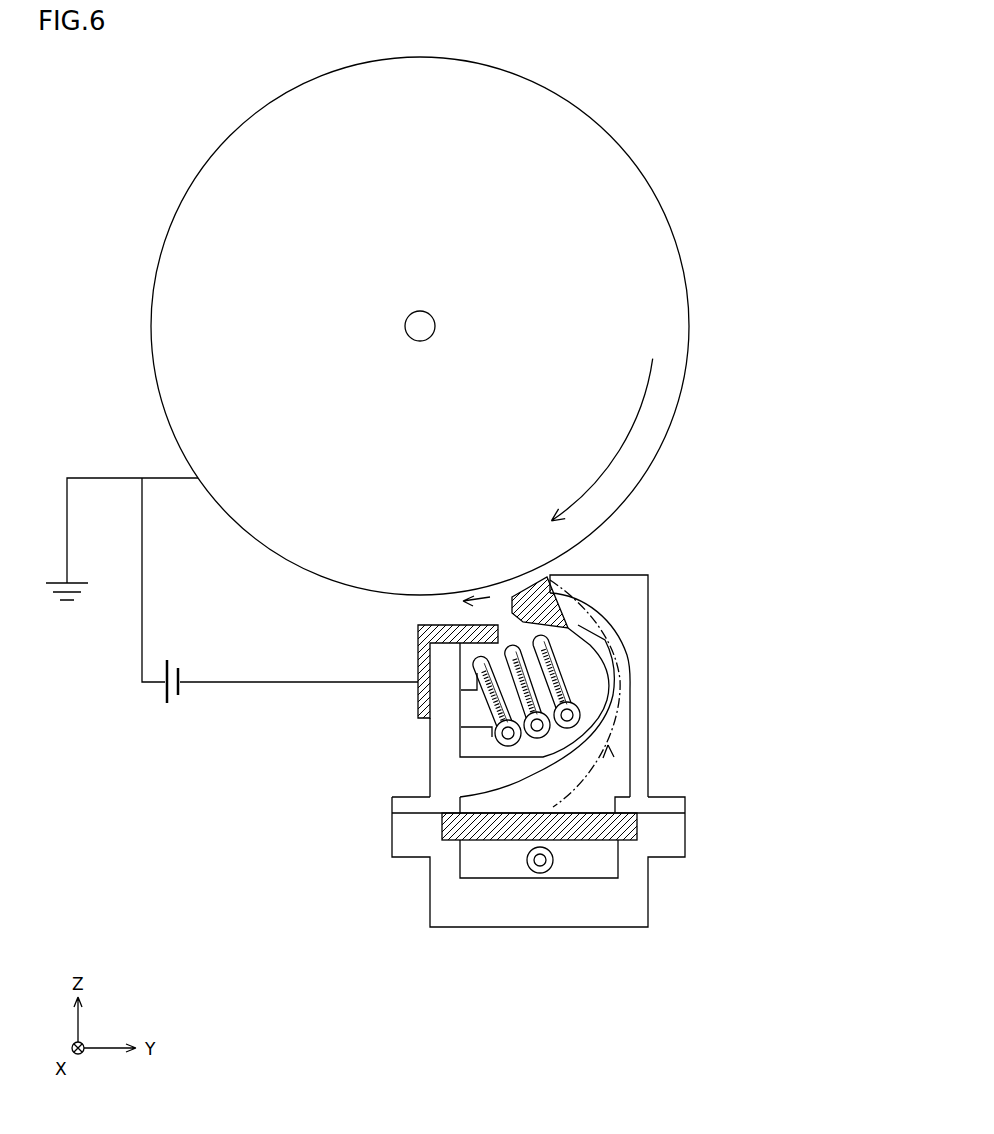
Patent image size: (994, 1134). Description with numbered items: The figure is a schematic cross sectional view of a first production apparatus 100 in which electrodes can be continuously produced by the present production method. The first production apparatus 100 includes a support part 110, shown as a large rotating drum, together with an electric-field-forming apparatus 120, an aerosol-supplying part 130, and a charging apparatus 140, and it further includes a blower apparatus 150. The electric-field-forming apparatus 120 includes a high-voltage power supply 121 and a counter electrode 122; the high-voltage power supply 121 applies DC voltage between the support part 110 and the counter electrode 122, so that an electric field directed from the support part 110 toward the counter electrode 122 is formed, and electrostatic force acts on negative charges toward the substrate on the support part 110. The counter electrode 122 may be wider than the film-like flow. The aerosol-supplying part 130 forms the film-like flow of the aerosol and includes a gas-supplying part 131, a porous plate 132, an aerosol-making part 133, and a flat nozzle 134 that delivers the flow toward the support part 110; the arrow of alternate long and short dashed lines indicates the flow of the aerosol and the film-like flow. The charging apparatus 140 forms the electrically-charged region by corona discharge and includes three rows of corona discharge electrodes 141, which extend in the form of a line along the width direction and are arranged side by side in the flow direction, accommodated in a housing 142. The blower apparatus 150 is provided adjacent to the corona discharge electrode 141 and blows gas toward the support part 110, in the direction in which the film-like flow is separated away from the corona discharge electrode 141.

The first production apparatus 100 is at (777, 86).
The support part 110 is at (689, 312).
The electric-field-forming apparatus 120 is at (272, 598).
The high-voltage power supply 121 is at (180, 670).
The counter electrode 122 is at (418, 660).
The aerosol-supplying part 130 is at (631, 730).
The gas-supplying part 131 is at (664, 876).
The porous plate 132 is at (637, 830).
The aerosol-making part 133 is at (650, 777).
The flat nozzle 134 is at (550, 579).
The charging apparatus 140 is at (457, 695).
The corona discharge electrode 141 is at (493, 707).
The housing 142 is at (477, 673).
The blower apparatus 150 is at (495, 735).